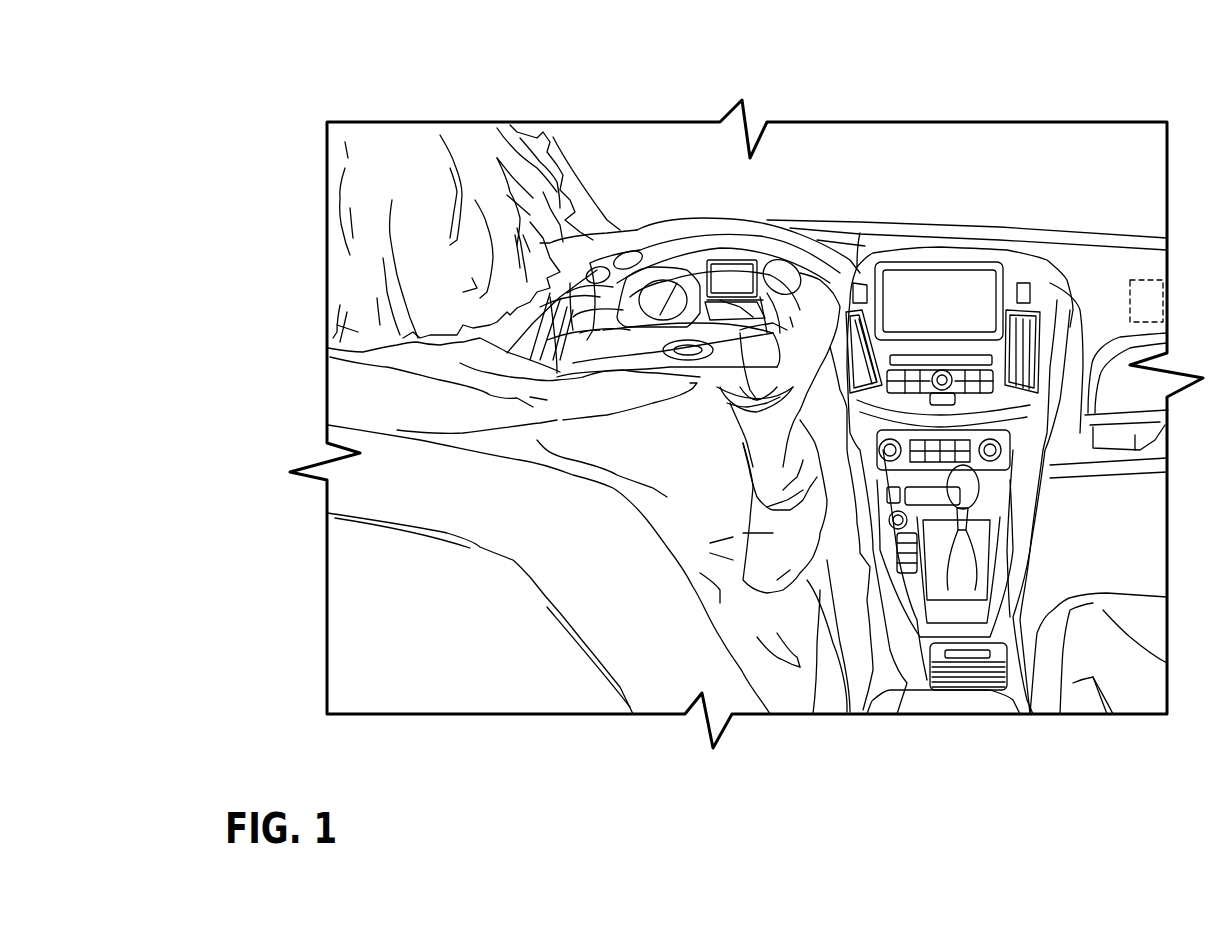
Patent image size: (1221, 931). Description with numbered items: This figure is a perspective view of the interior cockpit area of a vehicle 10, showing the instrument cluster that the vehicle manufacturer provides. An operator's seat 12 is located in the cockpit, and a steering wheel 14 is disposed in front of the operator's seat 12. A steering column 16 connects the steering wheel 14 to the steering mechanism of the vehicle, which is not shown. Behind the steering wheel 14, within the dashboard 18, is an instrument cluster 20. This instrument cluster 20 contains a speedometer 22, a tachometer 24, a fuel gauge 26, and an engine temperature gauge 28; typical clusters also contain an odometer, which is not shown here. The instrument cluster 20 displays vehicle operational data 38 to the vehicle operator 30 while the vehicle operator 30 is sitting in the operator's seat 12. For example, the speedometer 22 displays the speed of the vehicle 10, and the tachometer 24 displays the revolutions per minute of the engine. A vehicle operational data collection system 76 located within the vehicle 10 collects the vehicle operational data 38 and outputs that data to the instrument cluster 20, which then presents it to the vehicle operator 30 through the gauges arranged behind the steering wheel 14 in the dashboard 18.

The vehicle 10 is at (1045, 100).
The operator's seat 12 is at (440, 580).
The steering wheel 14 is at (625, 240).
The steering column 16 is at (858, 222).
The dashboard 18 is at (1083, 305).
The instrument cluster 20 is at (711, 263).
The speedometer 22 is at (767, 297).
The tachometer 24 is at (682, 270).
The fuel gauge 26 is at (724, 305).
The engine temperature gauge 28 is at (853, 257).
The vehicle operator 30 is at (440, 258).
The vehicle operational data 38 is at (735, 285).
The vehicle operational data collection system 76 is at (1143, 280).